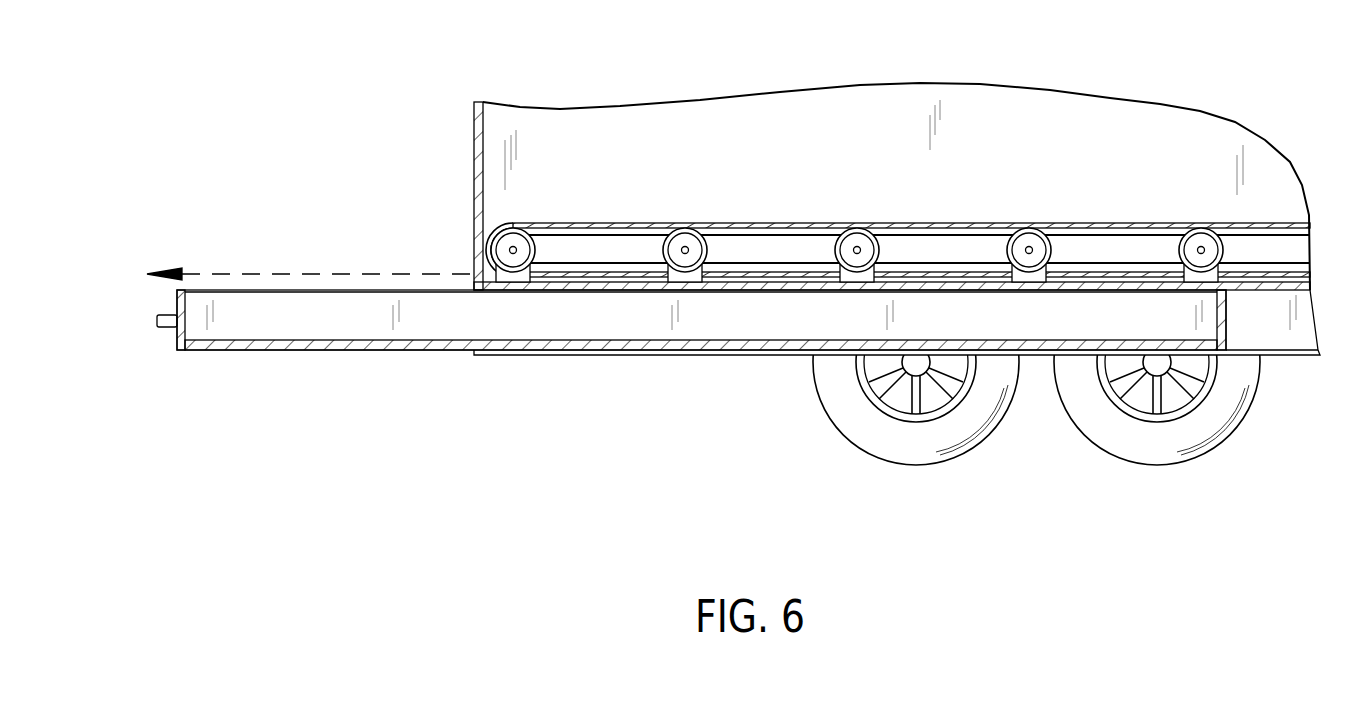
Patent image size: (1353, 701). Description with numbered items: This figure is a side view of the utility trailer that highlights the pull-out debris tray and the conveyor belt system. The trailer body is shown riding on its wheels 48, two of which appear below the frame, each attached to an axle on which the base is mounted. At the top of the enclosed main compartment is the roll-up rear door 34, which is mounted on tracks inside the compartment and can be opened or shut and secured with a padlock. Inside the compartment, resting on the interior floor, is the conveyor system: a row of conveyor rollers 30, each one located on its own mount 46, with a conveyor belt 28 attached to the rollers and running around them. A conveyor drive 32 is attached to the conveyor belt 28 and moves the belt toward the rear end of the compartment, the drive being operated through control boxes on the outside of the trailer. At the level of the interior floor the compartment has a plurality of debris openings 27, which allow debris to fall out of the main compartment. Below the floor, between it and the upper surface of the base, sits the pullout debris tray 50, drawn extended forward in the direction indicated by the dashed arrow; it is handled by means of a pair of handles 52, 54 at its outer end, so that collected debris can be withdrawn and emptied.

The debris openings 27 is at (733, 283).
The conveyor belt 28 is at (624, 223).
The conveyor rollers 30 is at (850, 236).
The conveyor drive 32 is at (1204, 246).
The roll-up rear door 34 is at (474, 134).
The mounts 46 is at (1047, 264).
The wheels 48 is at (916, 464).
The pullout debris tray 50 is at (280, 292).
The handle 52 is at (133, 267).
The handle 54 is at (157, 317).